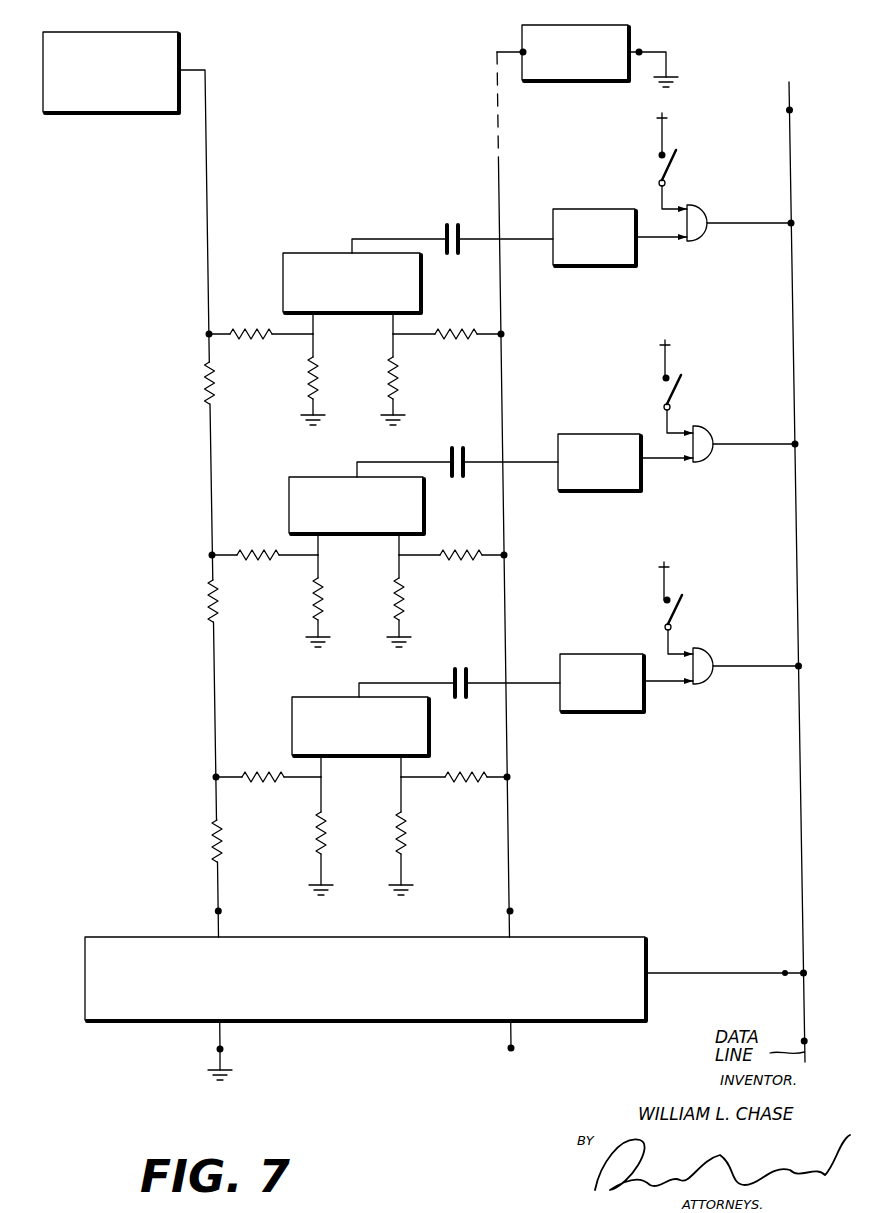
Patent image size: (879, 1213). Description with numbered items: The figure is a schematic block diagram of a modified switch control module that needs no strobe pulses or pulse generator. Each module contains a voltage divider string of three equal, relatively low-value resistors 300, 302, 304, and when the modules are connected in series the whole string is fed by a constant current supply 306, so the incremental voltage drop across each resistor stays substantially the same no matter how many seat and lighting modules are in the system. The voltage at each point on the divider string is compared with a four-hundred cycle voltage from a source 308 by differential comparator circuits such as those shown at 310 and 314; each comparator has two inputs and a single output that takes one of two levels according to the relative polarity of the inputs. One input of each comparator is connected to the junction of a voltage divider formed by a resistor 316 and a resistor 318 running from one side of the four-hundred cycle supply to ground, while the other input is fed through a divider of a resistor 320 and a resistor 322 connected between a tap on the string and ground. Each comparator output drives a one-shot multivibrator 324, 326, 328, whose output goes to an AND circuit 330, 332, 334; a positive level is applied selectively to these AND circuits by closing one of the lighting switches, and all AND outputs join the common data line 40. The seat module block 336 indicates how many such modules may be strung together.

The common data line 40 is at (790, 97).
The resistor 300 is at (214, 838).
The resistor 302 is at (210, 600).
The resistor 304 is at (206, 384).
The constant current supply 306 is at (125, 113).
The 400 cycle voltage source 308 is at (537, 25).
The differential comparator circuit 310 is at (292, 731).
The differential comparator circuit 314 is at (316, 253).
The resistor 316 is at (398, 380).
The resistor 318 is at (472, 343).
The resistor 320 is at (308, 380).
The resistor 322 is at (262, 343).
The one-shot multivibrator 324 is at (608, 712).
The one-shot multivibrator 326 is at (606, 491).
The one-shot multivibrator 328 is at (600, 266).
The AND circuit 330 is at (712, 683).
The AND circuit 332 is at (712, 461).
The AND circuit 334 is at (706, 240).
The seat module block 336 is at (120, 1022).